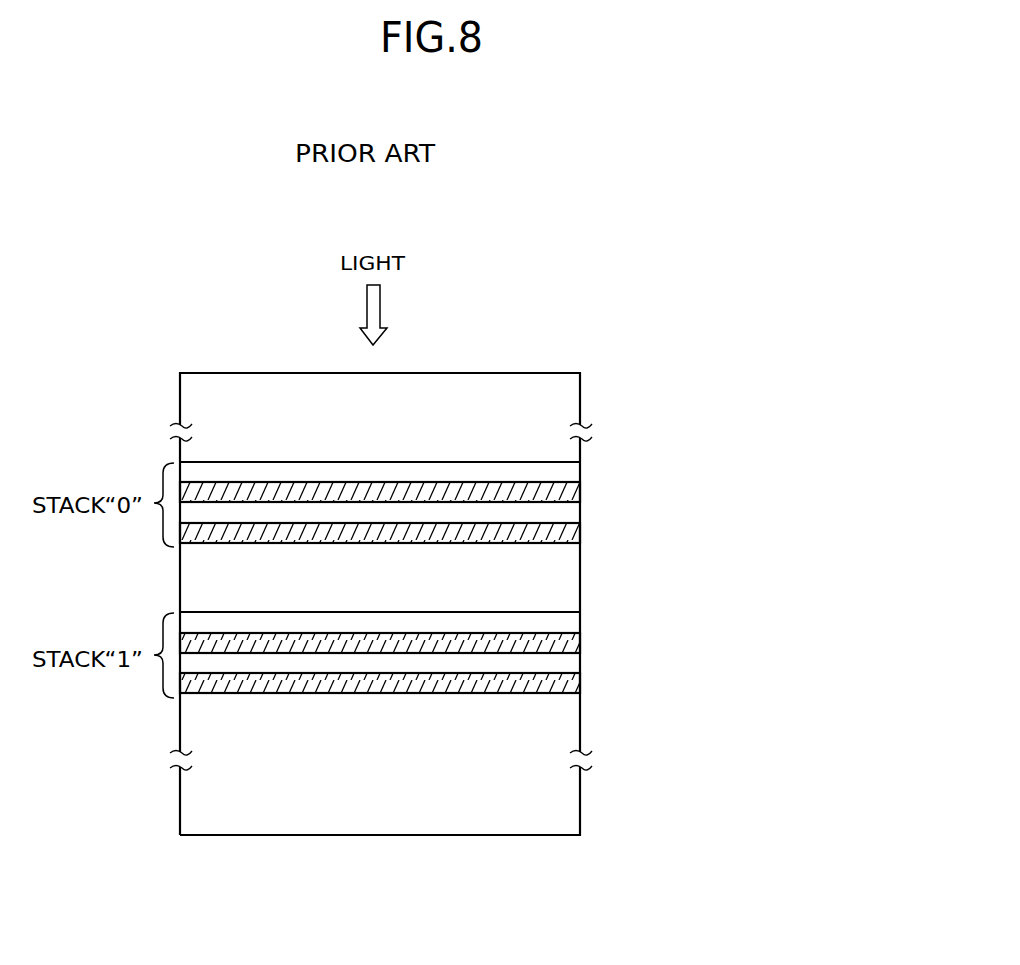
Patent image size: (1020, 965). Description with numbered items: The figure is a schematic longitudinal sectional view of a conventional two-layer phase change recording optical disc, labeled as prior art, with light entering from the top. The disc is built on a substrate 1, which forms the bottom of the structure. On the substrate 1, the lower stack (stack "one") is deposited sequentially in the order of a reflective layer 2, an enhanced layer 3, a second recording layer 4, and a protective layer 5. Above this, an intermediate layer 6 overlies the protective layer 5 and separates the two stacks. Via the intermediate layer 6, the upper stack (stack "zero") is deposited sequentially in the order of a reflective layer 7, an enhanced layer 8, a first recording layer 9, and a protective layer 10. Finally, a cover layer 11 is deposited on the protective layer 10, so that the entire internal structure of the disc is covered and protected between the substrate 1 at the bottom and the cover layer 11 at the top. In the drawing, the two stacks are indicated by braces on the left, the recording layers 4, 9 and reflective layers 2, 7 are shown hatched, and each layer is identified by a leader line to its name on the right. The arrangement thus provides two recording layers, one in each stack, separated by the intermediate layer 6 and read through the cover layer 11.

The substrate 1 is at (542, 778).
The reflective layer 2 is at (560, 685).
The enhanced layer 3 is at (560, 660).
The recording layer 4 is at (562, 643).
The protective layer 5 is at (558, 620).
The intermediate layer 6 is at (560, 586).
The reflective layer 7 is at (550, 528).
The enhanced layer 8 is at (548, 512).
The recording layer 9 is at (549, 489).
The protective layer 10 is at (549, 471).
The cover layer 11 is at (545, 405).